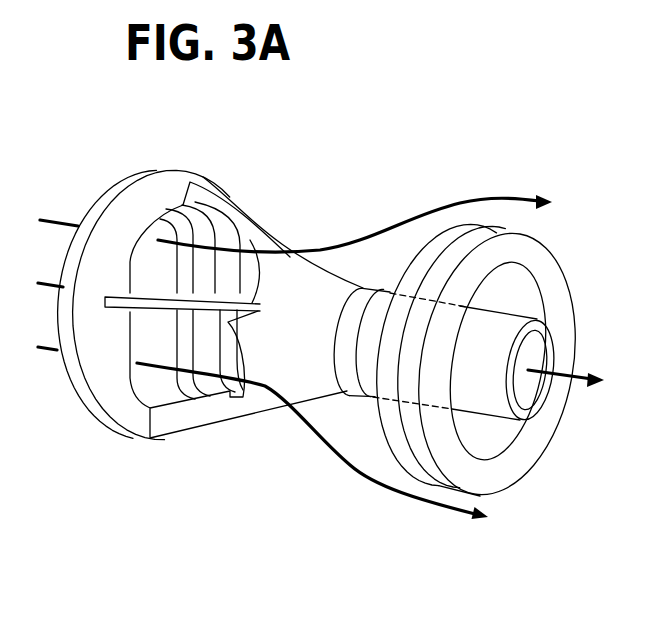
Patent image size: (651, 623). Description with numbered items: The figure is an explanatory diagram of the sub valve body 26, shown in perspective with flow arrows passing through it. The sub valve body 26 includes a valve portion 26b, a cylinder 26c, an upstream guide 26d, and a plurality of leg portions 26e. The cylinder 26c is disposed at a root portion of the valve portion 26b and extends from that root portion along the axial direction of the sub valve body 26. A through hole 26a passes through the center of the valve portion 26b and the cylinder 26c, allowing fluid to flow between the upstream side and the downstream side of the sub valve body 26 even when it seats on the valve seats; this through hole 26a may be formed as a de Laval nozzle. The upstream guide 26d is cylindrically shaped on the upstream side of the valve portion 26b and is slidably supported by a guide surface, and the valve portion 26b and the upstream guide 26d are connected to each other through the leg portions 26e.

The sub valve body 26 is at (321, 330).
The through hole 26a is at (525, 387).
The valve portion 26b is at (398, 287).
The cylinder 26c is at (495, 392).
The upstream guide 26d is at (173, 171).
The leg portions 26e is at (257, 223).